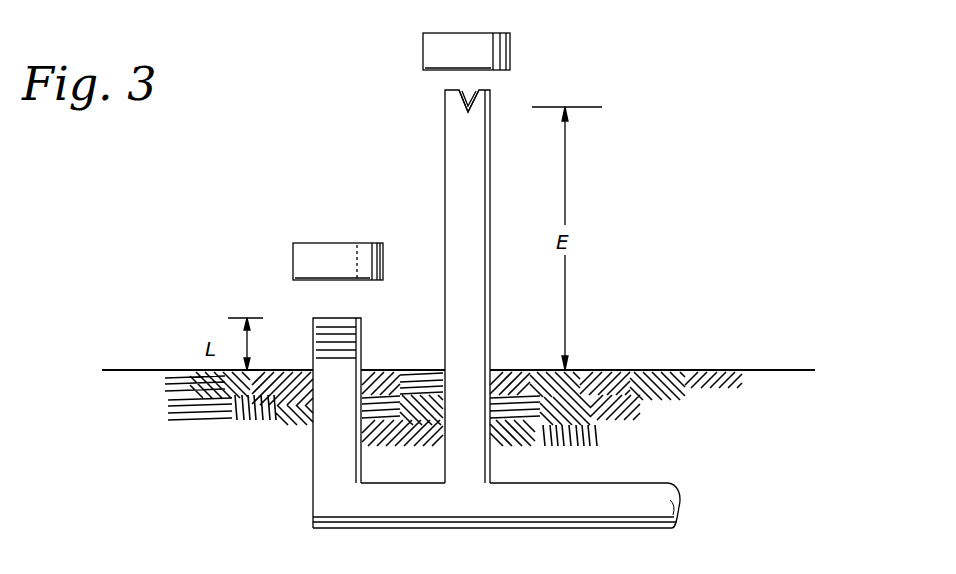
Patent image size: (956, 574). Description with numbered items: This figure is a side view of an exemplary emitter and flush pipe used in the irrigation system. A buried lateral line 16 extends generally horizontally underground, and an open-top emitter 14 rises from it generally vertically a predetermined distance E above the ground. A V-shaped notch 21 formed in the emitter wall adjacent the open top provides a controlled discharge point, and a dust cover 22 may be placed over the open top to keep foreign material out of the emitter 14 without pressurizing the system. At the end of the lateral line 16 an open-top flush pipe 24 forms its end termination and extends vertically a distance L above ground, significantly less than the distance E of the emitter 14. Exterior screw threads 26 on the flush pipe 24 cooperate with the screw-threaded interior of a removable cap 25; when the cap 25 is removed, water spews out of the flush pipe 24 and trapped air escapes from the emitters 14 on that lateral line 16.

The emitter 14 is at (445, 200).
The lateral line 16 is at (645, 473).
The V-shaped notch 21 is at (467, 94).
The dust cover 22 is at (510, 45).
The flush pipe 24 is at (315, 370).
The cap 25 is at (330, 252).
The exterior screw threads 26 is at (362, 331).